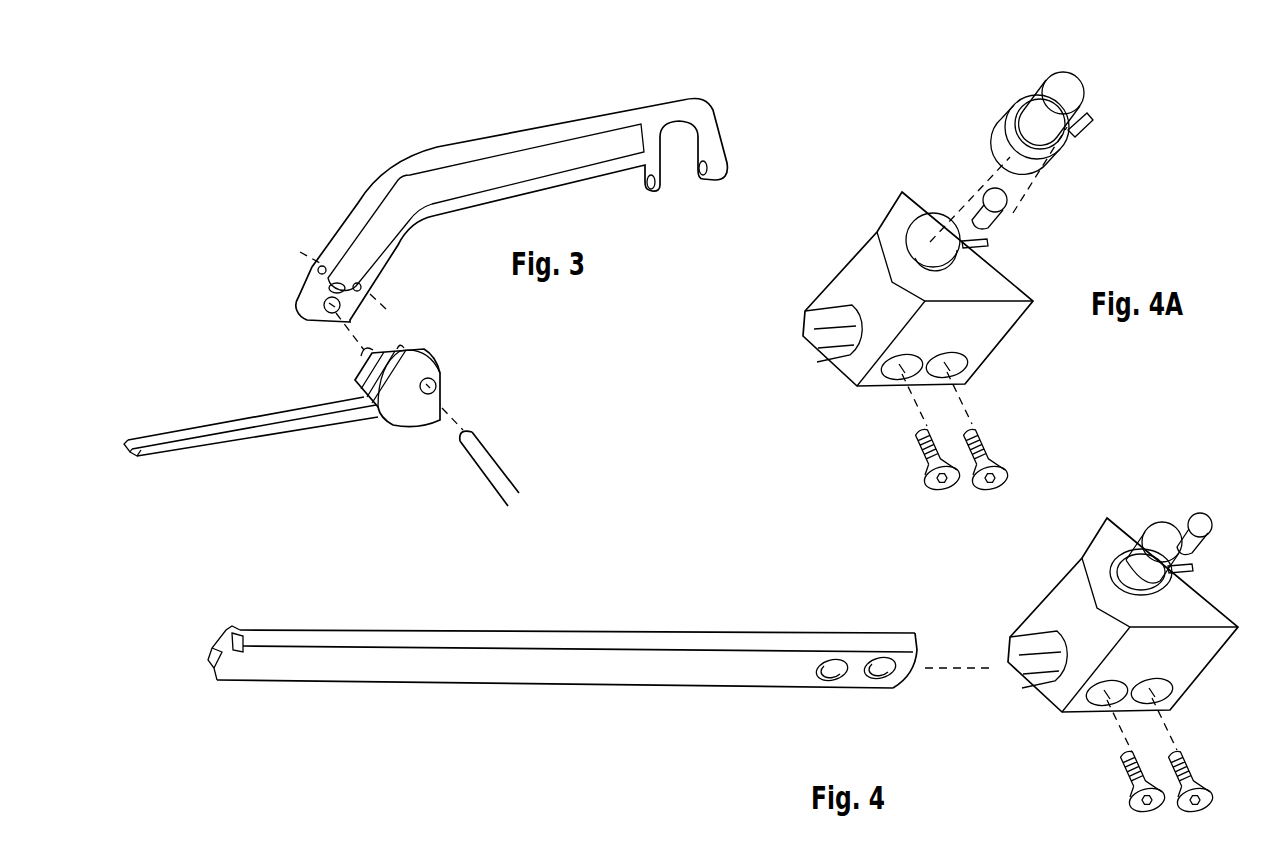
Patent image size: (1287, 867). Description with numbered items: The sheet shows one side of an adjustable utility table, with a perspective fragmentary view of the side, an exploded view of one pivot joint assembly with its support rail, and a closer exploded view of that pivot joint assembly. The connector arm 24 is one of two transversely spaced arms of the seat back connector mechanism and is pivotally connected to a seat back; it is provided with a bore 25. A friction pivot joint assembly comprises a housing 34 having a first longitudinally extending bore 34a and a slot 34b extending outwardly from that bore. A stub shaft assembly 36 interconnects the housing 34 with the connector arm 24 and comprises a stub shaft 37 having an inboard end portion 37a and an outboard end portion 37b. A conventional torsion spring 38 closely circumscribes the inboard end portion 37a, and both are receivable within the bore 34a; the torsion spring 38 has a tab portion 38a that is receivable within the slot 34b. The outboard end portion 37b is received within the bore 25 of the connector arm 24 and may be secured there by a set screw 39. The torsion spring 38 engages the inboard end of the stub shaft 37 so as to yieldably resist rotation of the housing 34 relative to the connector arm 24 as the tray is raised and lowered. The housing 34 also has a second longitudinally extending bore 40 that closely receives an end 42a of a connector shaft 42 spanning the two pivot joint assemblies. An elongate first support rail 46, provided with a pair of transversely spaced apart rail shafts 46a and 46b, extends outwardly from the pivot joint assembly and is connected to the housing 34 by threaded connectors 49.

In FIG. 3, the first connector arm 24 is at (522, 138).
In FIG. 3, the bore 25 is at (316, 310).
In FIG. 3, the set screw 39 is at (364, 320).
In FIG. 3, the housing 34 is at (395, 378).
In FIG. 4A, the housing 34 is at (912, 282).
In FIG. 4, the housing 34 is at (1123, 615).
In FIG. 4A, the first longitudinally extending bore 34a is at (925, 225).
In FIG. 4A, the slot 34b is at (975, 248).
In FIG. 4, the slot 34b is at (1177, 573).
In FIG. 4A, the stub shaft assembly 36 is at (1035, 147).
In FIG. 4, the stub shaft assembly 36 is at (1134, 533).
In FIG. 4A, the stub shaft 37 is at (1037, 92).
In FIG. 4, the stub shaft 37 is at (1137, 537).
In FIG. 4A, the inboard end portion 37a is at (1000, 137).
In FIG. 3, the outboard end portion 37b is at (362, 357).
In FIG. 4A, the outboard end portion 37b is at (1082, 85).
In FIG. 4, the outboard end portion 37b is at (1153, 527).
In FIG. 4A, the torsion spring 38 is at (1038, 152).
In FIG. 4A, the tab portion 38a is at (1090, 127).
In FIG. 3, the second longitudinally extending bore 40 is at (441, 386).
In FIG. 3, the connector shaft 42 is at (486, 452).
In FIG. 3, the end of connector shaft 42a is at (474, 428).
In FIG. 3, the first support rail 46 is at (228, 441).
In FIG. 4, the first support rail 46 is at (572, 658).
In FIG. 3, the rail shaft 46a is at (146, 452).
In FIG. 4, the rail shaft 46a is at (210, 663).
In FIG. 3, the rail shaft 46b is at (127, 443).
In FIG. 4, the rail shaft 46b is at (260, 635).
In FIG. 4A, the threaded connector 49 is at (978, 440).
In FIG. 4, the threaded connector 49 is at (1180, 760).